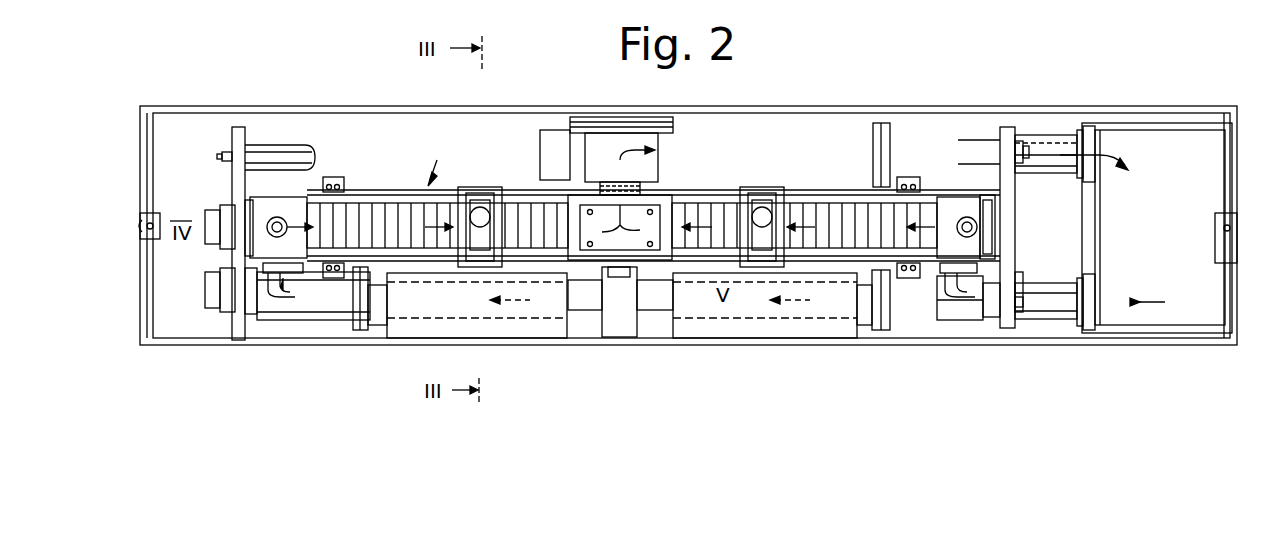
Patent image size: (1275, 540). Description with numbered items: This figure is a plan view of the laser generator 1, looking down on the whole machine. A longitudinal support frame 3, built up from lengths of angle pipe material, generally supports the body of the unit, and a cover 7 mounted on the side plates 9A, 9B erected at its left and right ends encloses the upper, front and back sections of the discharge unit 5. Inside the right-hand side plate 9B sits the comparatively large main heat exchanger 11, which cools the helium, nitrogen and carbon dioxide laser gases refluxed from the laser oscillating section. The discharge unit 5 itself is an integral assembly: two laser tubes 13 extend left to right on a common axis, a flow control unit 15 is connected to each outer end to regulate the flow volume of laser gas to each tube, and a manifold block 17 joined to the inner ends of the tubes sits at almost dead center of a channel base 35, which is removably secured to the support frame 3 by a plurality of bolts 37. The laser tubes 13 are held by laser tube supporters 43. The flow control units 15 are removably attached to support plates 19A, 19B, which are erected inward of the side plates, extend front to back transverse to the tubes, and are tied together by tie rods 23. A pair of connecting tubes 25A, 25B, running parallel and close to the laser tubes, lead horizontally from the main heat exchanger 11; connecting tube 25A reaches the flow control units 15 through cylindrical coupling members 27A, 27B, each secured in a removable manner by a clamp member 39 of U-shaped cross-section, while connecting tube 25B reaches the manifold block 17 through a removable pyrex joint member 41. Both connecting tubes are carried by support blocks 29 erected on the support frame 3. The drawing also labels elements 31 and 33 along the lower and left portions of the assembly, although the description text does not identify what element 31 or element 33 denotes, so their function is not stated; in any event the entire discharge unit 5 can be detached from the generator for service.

The laser generator 1 is at (790, 100).
The support frame 3 is at (950, 340).
The discharge unit 5 is at (436, 162).
The cover 7 is at (452, 106).
The side plate 9A is at (140, 160).
The side plate 9B is at (1237, 162).
The main heat exchanger 11 is at (1161, 221).
The laser tube 13 is at (416, 203).
The flow control unit 15 is at (290, 200).
The manifold block 17 is at (640, 240).
The support plate 19A is at (232, 132).
The support plate 19B is at (1010, 127).
The tie rod 23 is at (263, 145).
The connecting tube 25A is at (1045, 320).
The connecting tube 25B is at (1058, 140).
The cylindrical coupling member 27A is at (250, 263).
The cylindrical coupling member 27B is at (1000, 270).
The support block 29 is at (360, 330).
The box 31 is at (532, 330).
The carrier 33 is at (252, 203).
The channel base 35 is at (372, 190).
The bolt 37 is at (334, 177).
The clamp member 39 is at (270, 292).
The pyrex joint member 41 is at (618, 190).
The laser tube supporter 43 is at (478, 190).